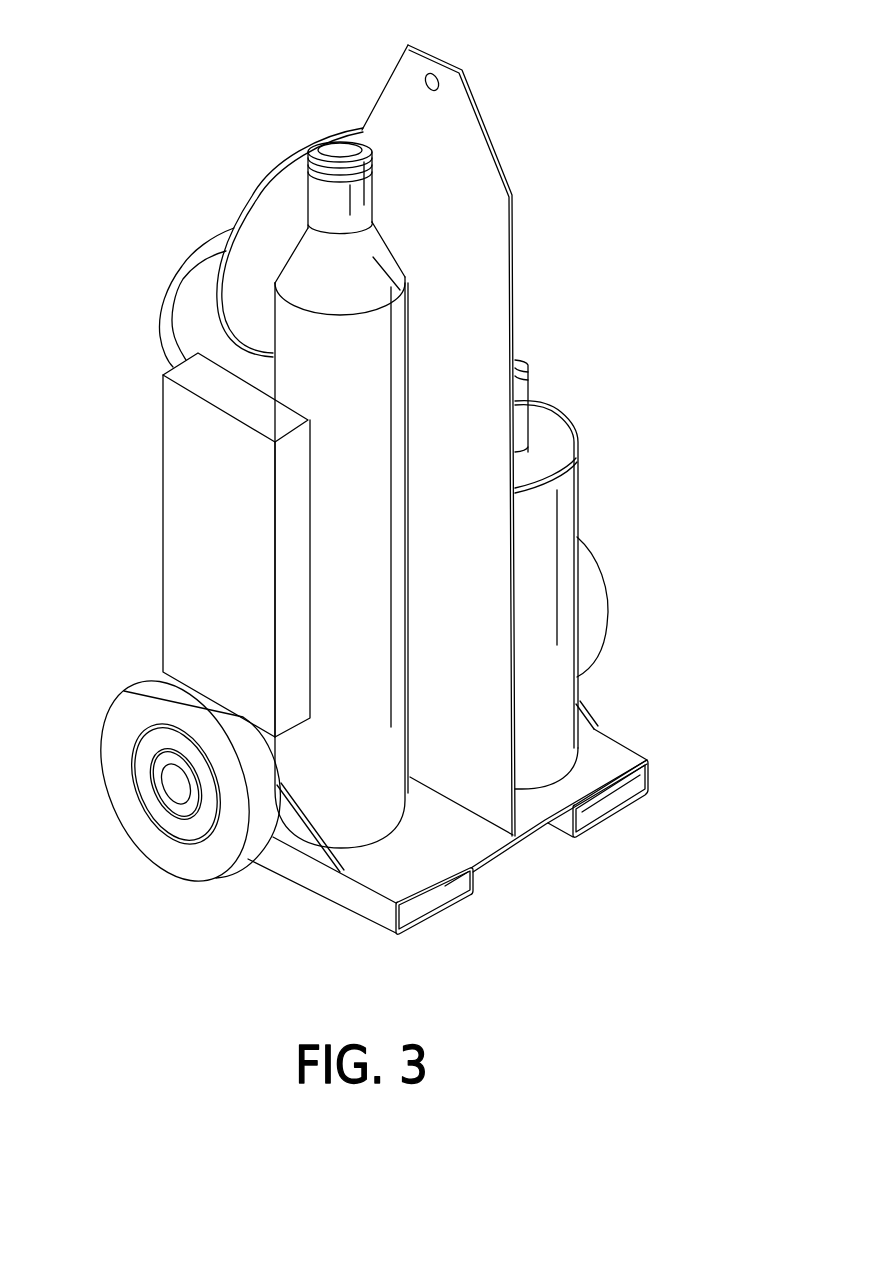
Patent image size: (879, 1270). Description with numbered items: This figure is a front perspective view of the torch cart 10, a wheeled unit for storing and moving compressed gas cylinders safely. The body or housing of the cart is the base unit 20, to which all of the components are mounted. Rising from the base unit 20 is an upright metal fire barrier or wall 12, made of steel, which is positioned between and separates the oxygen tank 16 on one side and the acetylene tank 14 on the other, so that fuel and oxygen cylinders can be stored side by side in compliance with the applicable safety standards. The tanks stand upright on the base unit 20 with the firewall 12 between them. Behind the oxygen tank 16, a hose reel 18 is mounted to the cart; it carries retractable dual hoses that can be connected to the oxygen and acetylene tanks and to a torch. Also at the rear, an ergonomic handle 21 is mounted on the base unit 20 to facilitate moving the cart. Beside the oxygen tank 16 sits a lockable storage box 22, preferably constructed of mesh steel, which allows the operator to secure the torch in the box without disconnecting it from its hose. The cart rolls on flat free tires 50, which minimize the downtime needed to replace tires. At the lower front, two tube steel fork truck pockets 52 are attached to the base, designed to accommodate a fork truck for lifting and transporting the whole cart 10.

The torch cart 10 is at (573, 335).
The fire barrier wall 12 is at (483, 122).
The acetylene tank 14 is at (580, 535).
The oxygen tank 16 is at (354, 386).
The hose reel 18 is at (255, 190).
The base unit 20 is at (147, 579).
The handle 21 is at (195, 262).
The lockable storage box 22 is at (172, 455).
The flat free tire 50 is at (143, 826).
The fork truck pocket 52 is at (438, 917).